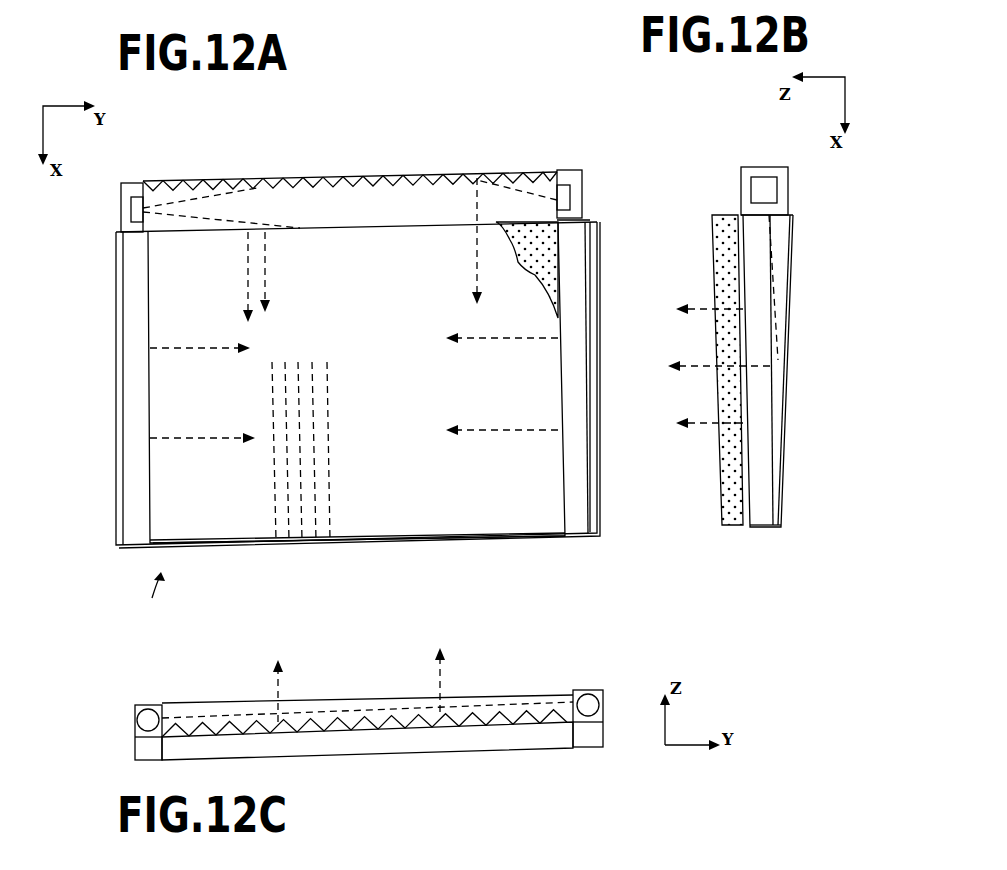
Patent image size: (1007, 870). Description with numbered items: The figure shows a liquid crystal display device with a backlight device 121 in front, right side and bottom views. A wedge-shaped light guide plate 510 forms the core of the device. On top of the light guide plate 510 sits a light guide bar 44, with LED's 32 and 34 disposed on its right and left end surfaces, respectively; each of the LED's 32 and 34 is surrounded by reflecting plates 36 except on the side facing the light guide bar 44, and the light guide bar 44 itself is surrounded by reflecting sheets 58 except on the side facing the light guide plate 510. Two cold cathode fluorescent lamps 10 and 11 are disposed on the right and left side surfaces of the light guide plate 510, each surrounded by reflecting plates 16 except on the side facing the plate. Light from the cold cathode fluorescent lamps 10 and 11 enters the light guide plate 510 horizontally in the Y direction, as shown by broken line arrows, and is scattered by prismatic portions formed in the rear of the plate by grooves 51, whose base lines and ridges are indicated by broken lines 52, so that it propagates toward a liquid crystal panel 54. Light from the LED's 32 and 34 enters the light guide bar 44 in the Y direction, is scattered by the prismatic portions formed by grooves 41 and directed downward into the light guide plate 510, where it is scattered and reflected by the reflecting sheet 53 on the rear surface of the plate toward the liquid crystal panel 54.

In FIG. 12A, the cold cathode fluorescent lamp 10 is at (575, 280).
In FIG. 12B, the cold cathode fluorescent lamp 10 is at (760, 514).
In FIG. 12C, the cold cathode fluorescent lamp 10 is at (604, 680).
In FIG. 12A, the cold cathode fluorescent lamp 11 is at (130, 318).
In FIG. 12C, the cold cathode fluorescent lamp 11 is at (150, 712).
In FIG. 12A, the reflecting plates 16 is at (118, 388).
In FIG. 12C, the reflecting plates 16 is at (135, 727).
In FIG. 12A, the LED 32 is at (570, 198).
In FIG. 12B, the LED 32 is at (758, 177).
In FIG. 12A, the LED 34 is at (131, 210).
In FIG. 12A, the reflecting plates 36 is at (138, 184).
In FIG. 12B, the reflecting plates 36 is at (786, 182).
In FIG. 12A, the grooves 41 is at (405, 174).
In FIG. 12A, the light guide bar 44 is at (304, 222).
In FIG. 12B, the light guide bar 44 is at (750, 187).
In FIG. 12C, the grooves 51 is at (368, 752).
In FIG. 12A, the broken lines 52 is at (320, 524).
In FIG. 12B, the reflecting sheet 53 is at (782, 470).
In FIG. 12C, the reflecting sheet 53 is at (548, 742).
In FIG. 12A, the liquid crystal panel 54 is at (568, 244).
In FIG. 12B, the liquid crystal panel 54 is at (715, 520).
In FIG. 12A, the reflecting sheets 58 is at (241, 180).
In FIG. 12A, the backlight device 121 is at (136, 594).
In FIG. 12A, the light guide plate 510 is at (246, 543).
In FIG. 12B, the light guide plate 510 is at (773, 390).
In FIG. 12C, the light guide plate 510 is at (255, 700).